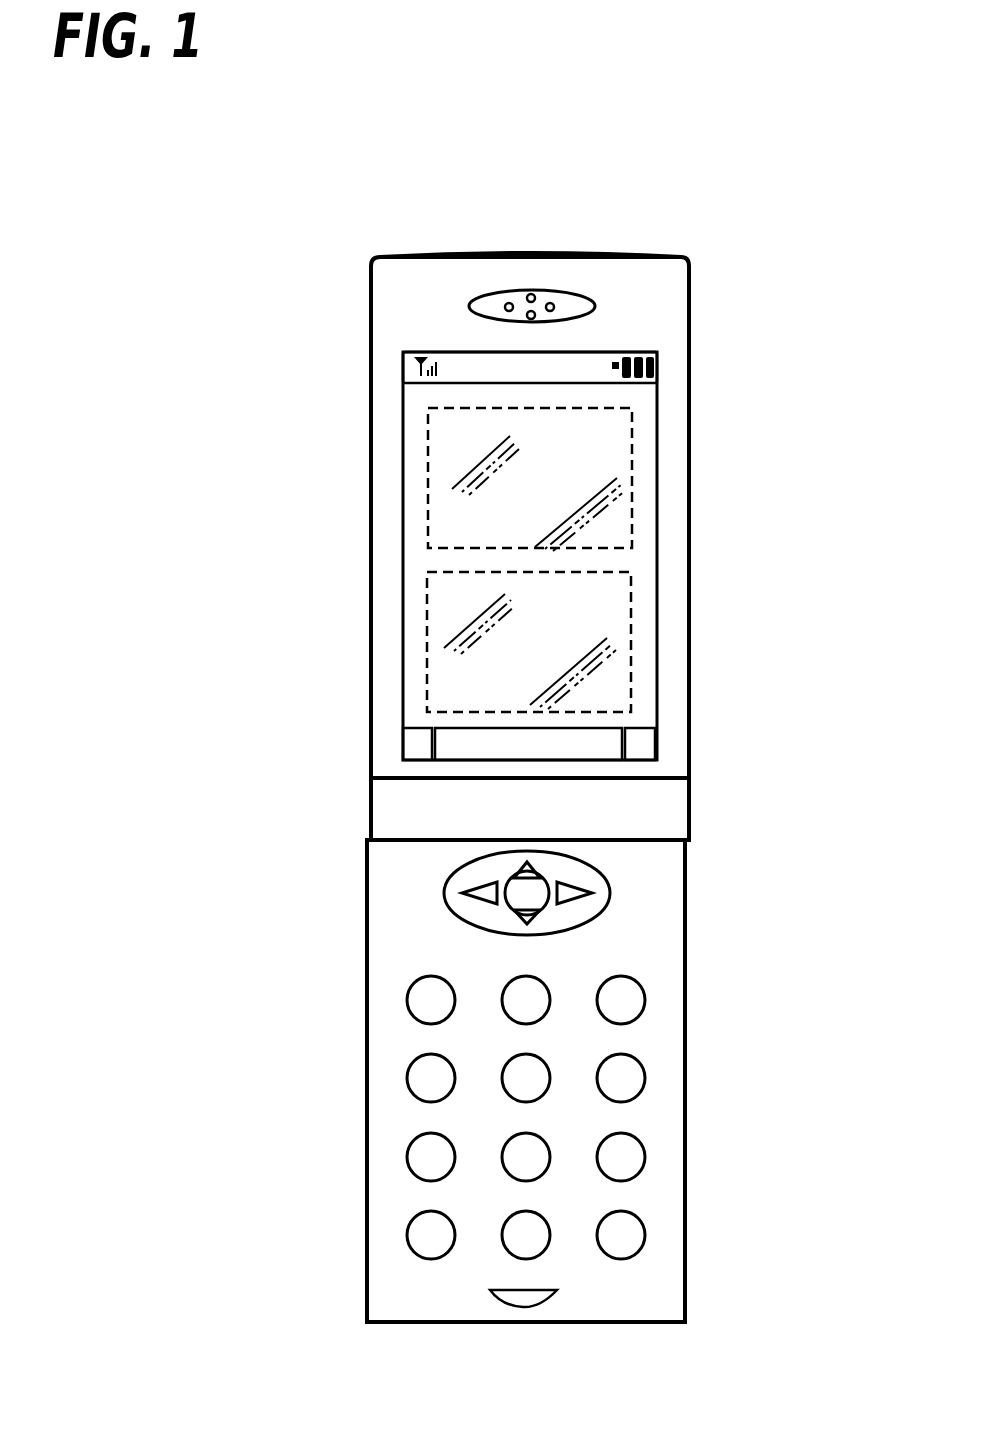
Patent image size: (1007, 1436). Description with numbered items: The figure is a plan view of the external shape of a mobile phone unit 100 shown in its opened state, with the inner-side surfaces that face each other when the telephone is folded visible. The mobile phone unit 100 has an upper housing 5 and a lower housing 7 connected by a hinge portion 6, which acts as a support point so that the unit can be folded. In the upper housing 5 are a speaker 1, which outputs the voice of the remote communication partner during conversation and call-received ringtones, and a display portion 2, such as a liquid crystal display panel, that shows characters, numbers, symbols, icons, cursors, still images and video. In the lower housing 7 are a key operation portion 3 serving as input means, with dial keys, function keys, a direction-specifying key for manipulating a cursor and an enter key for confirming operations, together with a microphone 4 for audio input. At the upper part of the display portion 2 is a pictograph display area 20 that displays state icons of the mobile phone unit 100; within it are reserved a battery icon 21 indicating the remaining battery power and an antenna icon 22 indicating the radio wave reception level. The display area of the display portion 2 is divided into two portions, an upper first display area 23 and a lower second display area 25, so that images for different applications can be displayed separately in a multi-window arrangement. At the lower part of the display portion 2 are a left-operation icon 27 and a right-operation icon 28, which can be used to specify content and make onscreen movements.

The mobile phone unit 100 is at (355, 137).
The speaker 1 is at (570, 291).
The display portion 2 is at (657, 525).
The key operation portion 3 is at (694, 843).
The microphone 4 is at (557, 1292).
The upper housing 5 is at (383, 618).
The hinge portion 6 is at (383, 815).
The lower housing 7 is at (380, 950).
The pictograph display area 20 is at (586, 370).
The battery icon 21 is at (657, 362).
The antenna icon 22 is at (432, 353).
The first display area 23 is at (610, 453).
The second display area 25 is at (615, 610).
The left-operation icon 27 is at (405, 743).
The right-operation icon 28 is at (650, 742).